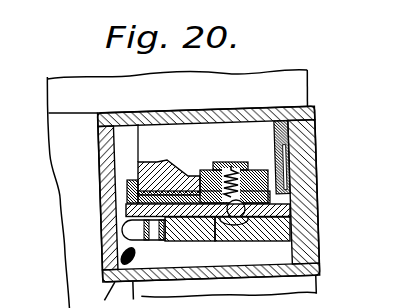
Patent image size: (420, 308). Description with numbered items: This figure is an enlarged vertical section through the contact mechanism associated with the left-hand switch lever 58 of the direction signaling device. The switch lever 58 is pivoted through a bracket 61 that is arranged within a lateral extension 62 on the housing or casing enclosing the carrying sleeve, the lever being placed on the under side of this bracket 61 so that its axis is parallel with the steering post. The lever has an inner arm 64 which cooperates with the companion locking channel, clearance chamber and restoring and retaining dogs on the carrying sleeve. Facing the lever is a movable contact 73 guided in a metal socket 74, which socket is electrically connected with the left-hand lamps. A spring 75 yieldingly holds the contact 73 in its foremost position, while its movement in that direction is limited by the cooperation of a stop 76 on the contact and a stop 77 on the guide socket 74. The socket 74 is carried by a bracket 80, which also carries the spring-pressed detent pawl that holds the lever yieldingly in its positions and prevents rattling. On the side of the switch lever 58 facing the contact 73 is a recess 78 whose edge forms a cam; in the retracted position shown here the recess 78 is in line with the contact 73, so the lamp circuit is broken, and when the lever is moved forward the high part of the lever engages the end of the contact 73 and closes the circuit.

The switch lever 58 is at (292, 227).
The bracket 61 is at (291, 196).
The lateral extension 62 is at (210, 261).
The inner arm 64 is at (130, 222).
The movable contact 73 is at (286, 217).
The metal socket 74 is at (196, 175).
The spring 75 is at (235, 170).
The stop 76 is at (284, 178).
The stop 77 is at (197, 233).
The recess 78 is at (237, 244).
The bracket 80 is at (157, 163).